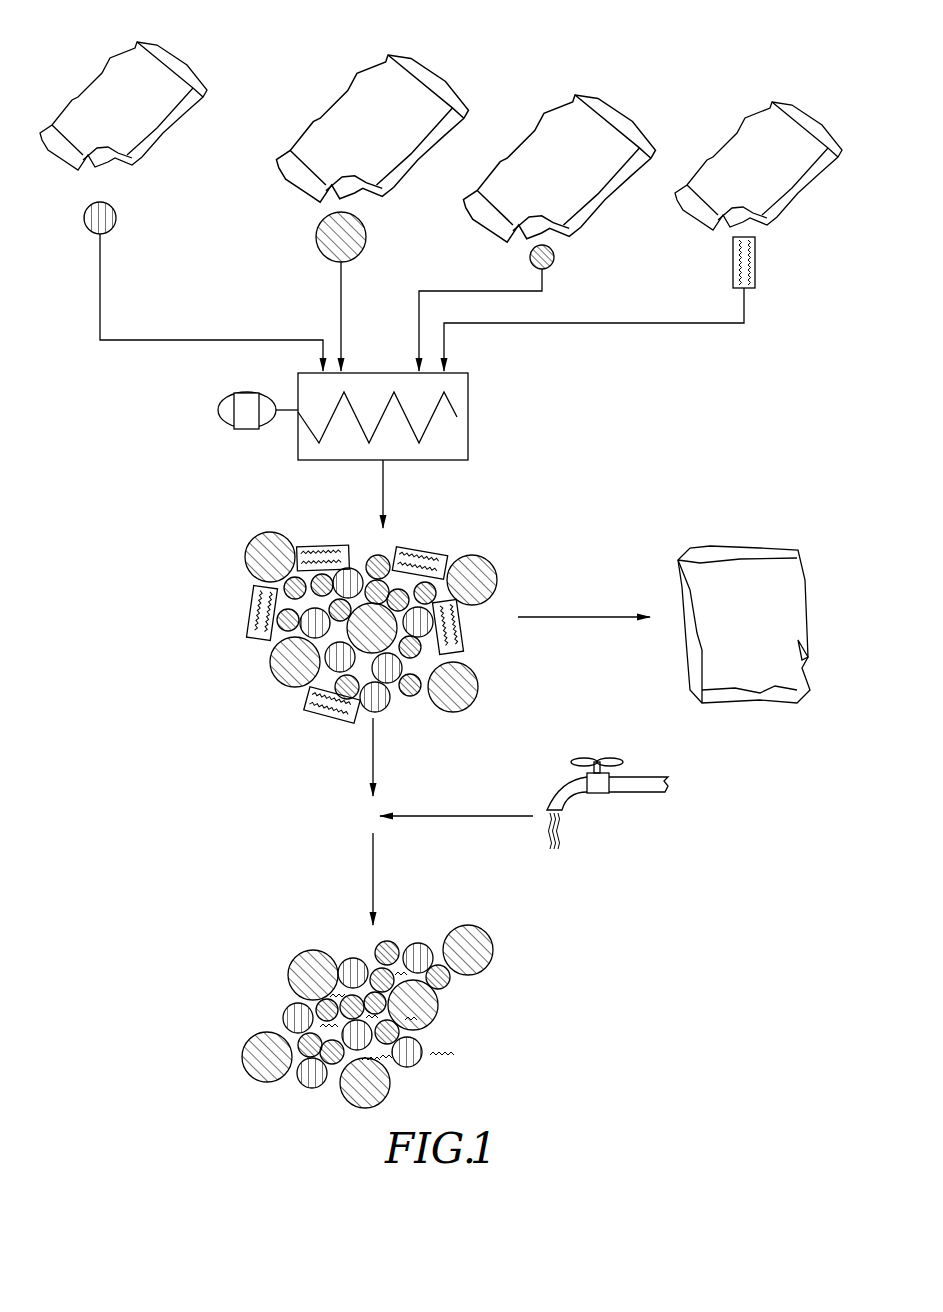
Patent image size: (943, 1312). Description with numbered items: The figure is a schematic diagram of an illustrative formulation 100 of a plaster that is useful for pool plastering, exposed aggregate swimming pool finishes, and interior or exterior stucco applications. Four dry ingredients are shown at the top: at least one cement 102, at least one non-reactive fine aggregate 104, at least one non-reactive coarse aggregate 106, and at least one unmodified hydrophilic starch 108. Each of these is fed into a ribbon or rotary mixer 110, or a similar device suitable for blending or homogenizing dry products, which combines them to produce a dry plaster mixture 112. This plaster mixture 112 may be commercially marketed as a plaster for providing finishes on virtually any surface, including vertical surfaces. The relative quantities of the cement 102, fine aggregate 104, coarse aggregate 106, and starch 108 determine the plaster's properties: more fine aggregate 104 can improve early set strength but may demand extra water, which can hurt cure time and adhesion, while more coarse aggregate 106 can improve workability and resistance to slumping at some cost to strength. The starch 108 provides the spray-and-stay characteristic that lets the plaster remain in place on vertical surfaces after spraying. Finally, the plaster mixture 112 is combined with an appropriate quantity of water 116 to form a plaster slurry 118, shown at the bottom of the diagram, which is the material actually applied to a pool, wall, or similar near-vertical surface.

The formulation 100 is at (688, 52).
The cement 102 is at (180, 60).
The fine aggregate 104 is at (610, 107).
The coarse aggregate 106 is at (425, 70).
The starch 108 is at (807, 113).
The mixer 110 is at (468, 413).
The plaster mixture 112 is at (463, 562).
The water 116 is at (637, 777).
The plaster slurry 118 is at (455, 930).